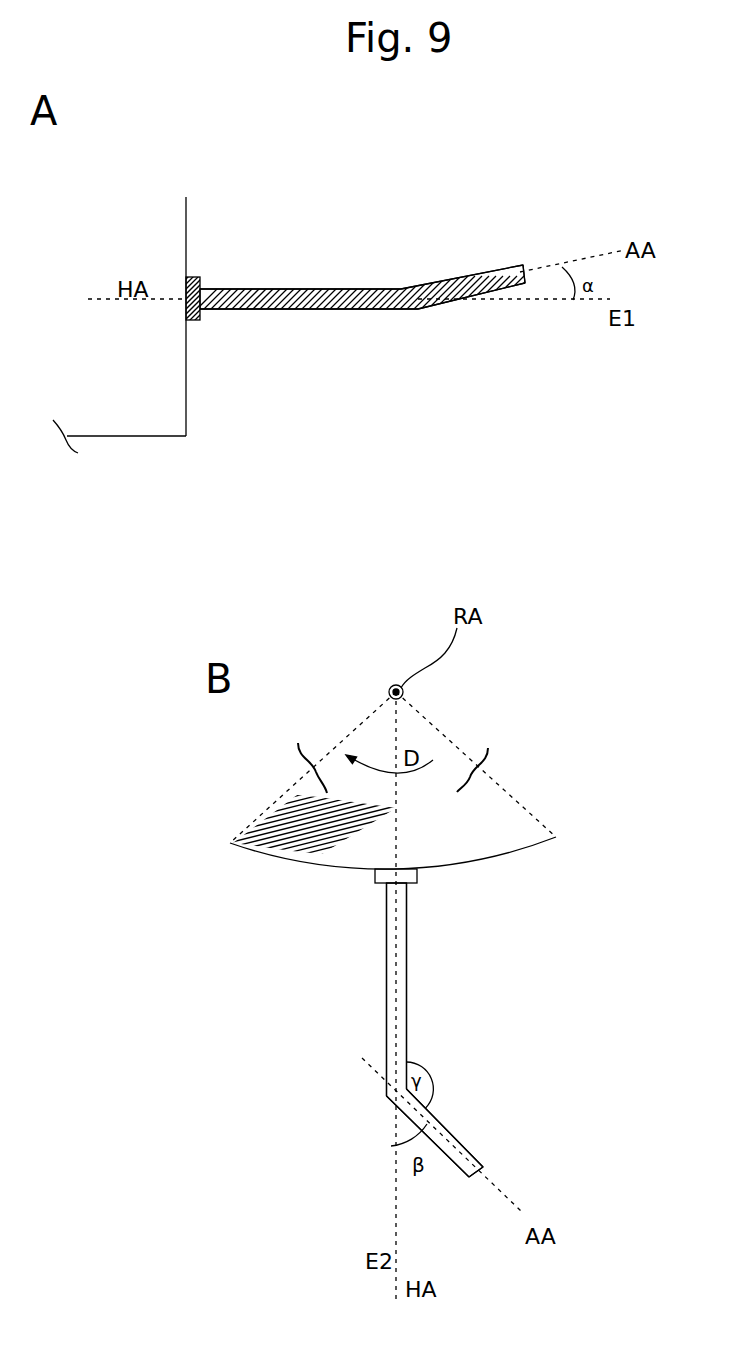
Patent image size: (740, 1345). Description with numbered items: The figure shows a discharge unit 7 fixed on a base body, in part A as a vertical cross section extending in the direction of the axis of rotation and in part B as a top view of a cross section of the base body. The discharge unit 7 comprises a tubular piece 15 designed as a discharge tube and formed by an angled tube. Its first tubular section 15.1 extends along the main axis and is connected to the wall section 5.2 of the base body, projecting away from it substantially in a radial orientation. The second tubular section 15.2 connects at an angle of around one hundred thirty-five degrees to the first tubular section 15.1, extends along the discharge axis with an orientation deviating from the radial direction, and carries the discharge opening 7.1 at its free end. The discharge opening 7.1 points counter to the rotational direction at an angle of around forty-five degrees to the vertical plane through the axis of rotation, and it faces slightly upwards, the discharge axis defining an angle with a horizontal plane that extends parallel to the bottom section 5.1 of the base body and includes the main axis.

The bottom section 5.1 is at (140, 435).
The wall section 5.2 is at (184, 227).
The discharge unit 7 is at (270, 237).
The discharge opening 7.1 is at (529, 266).
The tubular piece 15 is at (347, 289).
The first tubular section 15.1 is at (267, 313).
The second tubular section 15.2 is at (444, 301).